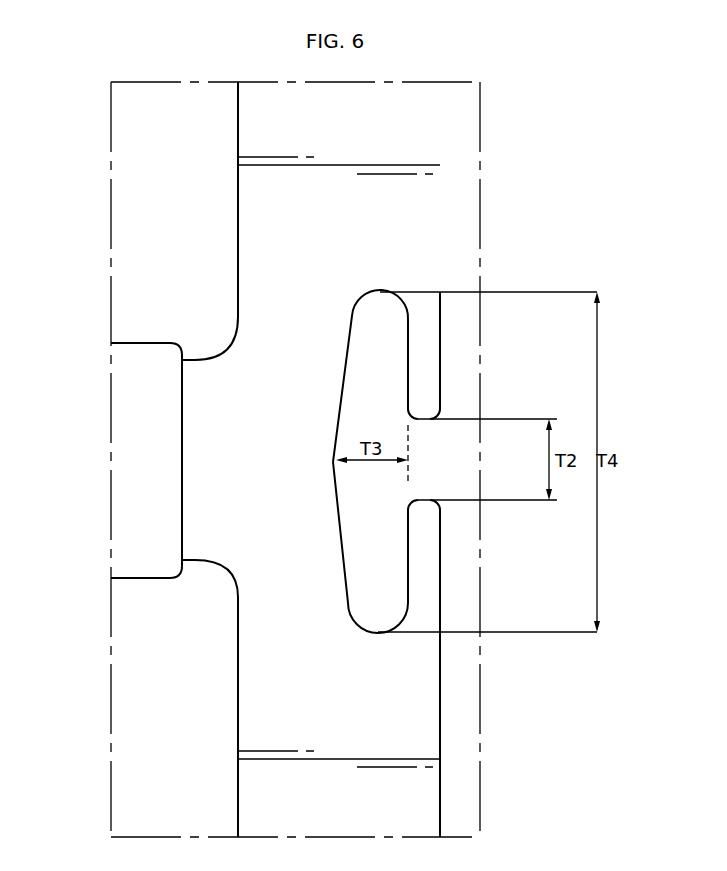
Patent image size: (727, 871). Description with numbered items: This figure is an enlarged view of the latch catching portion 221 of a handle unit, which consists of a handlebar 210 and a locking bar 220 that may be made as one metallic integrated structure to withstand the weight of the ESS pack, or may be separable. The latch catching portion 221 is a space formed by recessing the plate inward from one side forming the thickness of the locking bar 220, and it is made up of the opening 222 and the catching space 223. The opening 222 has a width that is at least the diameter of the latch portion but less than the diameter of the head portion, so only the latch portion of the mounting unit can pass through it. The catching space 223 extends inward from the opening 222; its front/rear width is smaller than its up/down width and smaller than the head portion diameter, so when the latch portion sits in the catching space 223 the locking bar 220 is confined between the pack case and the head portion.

The handlebar 210 is at (143, 396).
The locking bar 220 is at (403, 207).
The latch catching portion 221 is at (451, 407).
The opening 222 is at (424, 454).
The catching space 223 is at (381, 562).